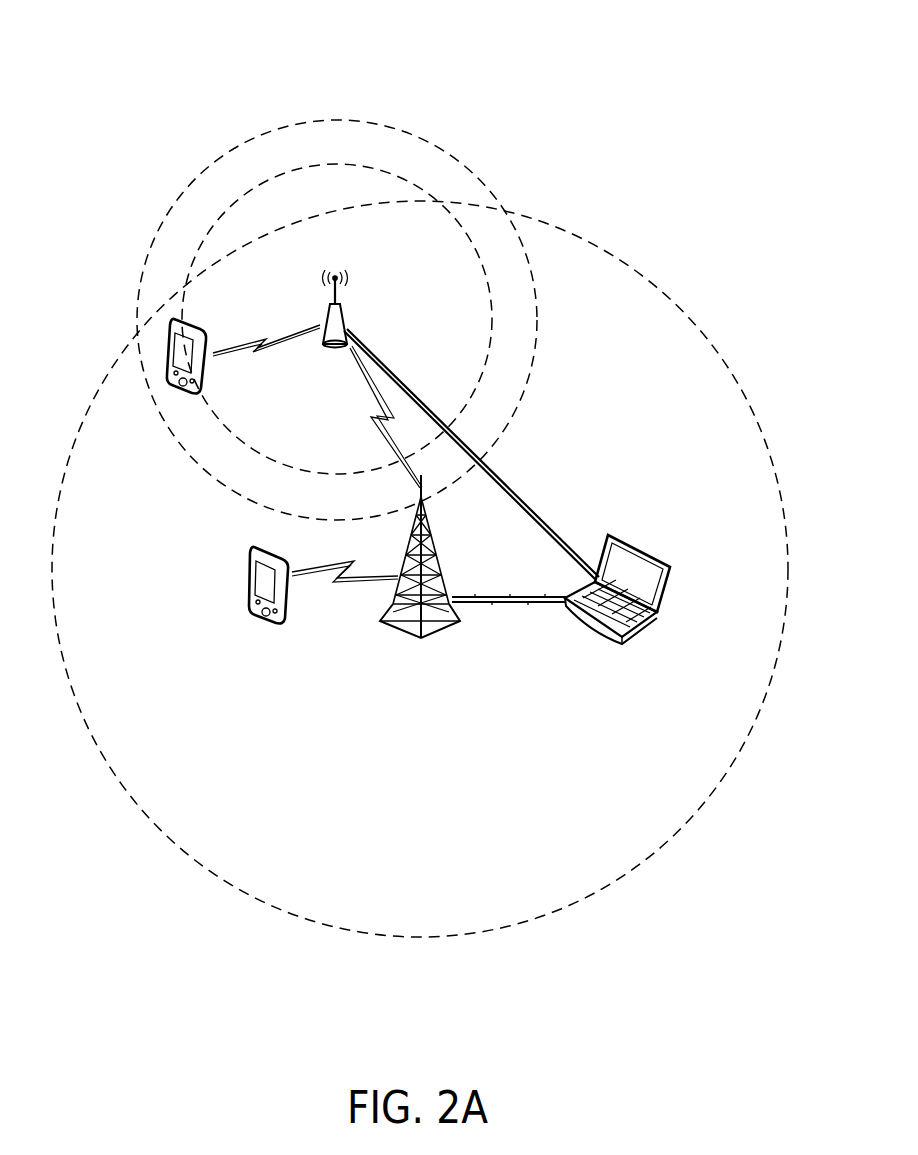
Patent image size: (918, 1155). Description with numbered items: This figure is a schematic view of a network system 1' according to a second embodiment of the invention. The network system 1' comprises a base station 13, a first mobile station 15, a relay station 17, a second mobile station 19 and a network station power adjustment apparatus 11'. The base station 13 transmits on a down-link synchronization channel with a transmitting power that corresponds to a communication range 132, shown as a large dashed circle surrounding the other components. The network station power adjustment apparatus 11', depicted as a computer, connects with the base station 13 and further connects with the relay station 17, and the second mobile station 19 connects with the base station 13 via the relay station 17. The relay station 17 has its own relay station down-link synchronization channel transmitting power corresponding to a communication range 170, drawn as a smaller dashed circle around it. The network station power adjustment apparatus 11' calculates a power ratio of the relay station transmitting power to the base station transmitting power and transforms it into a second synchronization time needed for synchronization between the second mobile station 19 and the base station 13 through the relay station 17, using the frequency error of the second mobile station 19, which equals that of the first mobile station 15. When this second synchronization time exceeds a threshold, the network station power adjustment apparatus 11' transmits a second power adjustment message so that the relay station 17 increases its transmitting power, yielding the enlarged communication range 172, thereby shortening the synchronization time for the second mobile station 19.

The network system 1' is at (215, 35).
The communication range 132 is at (552, 225).
The communication range 172 is at (340, 120).
The communication range 170 is at (488, 358).
The relay station 17 is at (343, 328).
The second mobile station 19 is at (210, 345).
The first mobile station 15 is at (245, 605).
The base station 13 is at (448, 578).
The network station power adjustment apparatus 11' is at (639, 609).